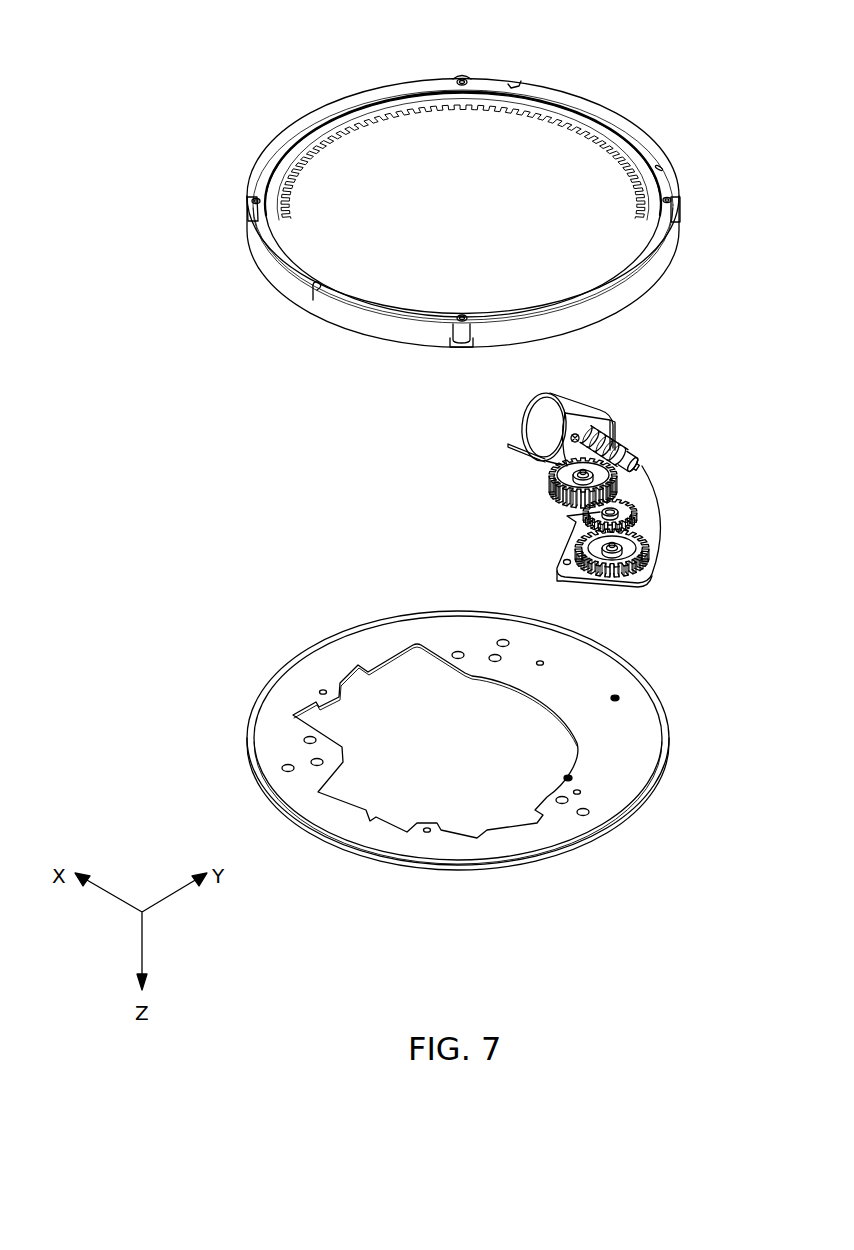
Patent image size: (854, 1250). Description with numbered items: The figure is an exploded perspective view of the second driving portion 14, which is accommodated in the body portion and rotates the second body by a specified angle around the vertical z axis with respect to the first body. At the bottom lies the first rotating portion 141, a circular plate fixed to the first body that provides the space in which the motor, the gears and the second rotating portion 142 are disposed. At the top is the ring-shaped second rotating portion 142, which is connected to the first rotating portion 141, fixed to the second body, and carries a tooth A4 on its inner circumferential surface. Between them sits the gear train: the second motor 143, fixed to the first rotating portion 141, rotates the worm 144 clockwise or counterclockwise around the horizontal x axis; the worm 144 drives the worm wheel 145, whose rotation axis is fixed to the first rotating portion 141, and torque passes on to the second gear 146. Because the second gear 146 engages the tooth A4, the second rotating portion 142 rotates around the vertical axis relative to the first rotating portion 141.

The second driving portion 14 is at (477, 29).
The first rotating portion 141 is at (645, 716).
The second rotating portion 142 is at (663, 184).
The second motor 143 is at (577, 404).
The worm 144 is at (627, 456).
The worm wheel 145 is at (552, 498).
The second gear 146 is at (632, 548).
The tooth A4 is at (577, 128).